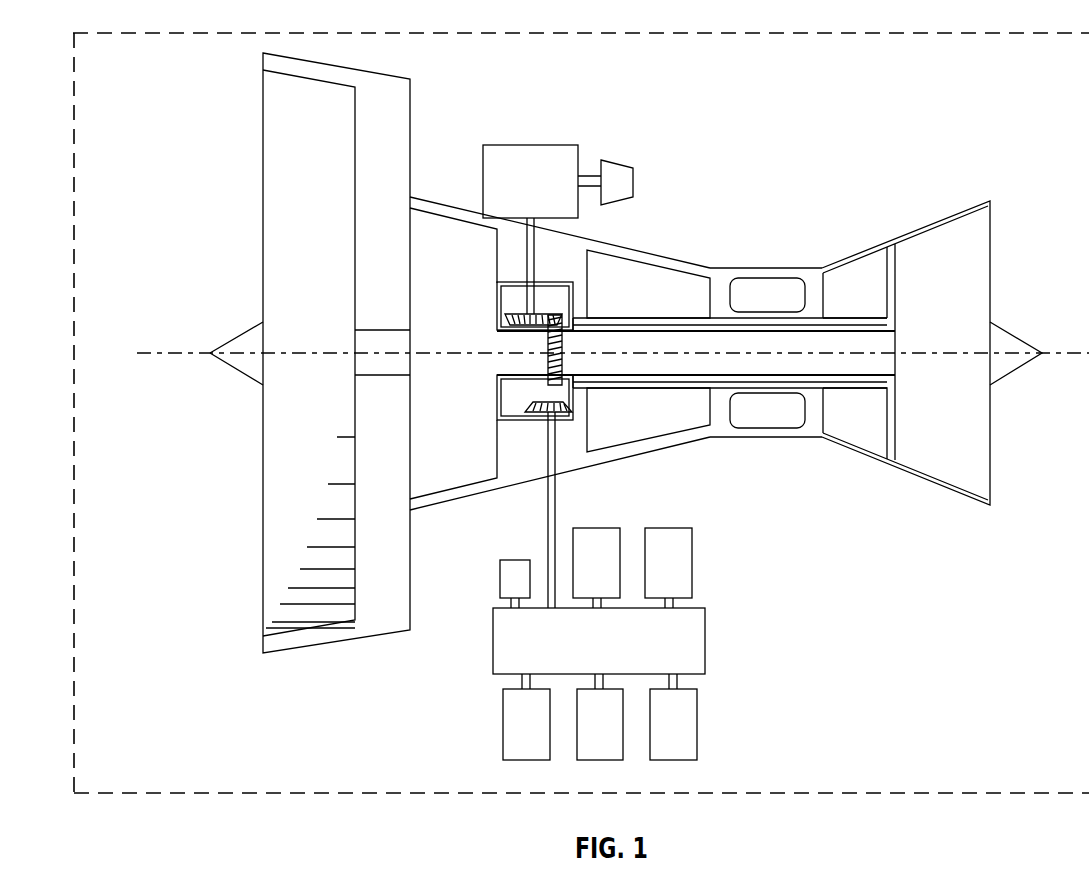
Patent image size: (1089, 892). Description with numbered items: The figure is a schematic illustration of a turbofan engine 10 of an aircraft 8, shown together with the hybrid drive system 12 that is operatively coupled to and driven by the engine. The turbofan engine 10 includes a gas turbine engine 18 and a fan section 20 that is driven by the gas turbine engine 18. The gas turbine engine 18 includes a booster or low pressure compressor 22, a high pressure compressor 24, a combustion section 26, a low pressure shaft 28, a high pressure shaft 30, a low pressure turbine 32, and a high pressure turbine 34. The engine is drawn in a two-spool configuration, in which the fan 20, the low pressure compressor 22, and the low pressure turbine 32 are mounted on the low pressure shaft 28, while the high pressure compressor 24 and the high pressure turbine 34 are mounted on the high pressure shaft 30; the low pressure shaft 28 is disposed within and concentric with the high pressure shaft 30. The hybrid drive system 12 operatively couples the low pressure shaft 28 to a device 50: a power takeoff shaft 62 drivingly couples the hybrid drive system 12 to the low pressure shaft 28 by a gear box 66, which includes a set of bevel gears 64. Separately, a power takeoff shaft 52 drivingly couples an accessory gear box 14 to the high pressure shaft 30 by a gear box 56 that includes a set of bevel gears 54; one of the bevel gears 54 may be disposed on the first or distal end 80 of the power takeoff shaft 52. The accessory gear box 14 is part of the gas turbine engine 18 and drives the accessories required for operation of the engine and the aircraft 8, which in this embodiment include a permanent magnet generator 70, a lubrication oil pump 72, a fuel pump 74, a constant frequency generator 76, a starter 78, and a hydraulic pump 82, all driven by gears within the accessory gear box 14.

The aircraft 8 is at (108, 30).
The turbofan engine 10 is at (424, 125).
The hybrid drive system 12 is at (545, 196).
The accessory gear box 14 is at (614, 658).
The gas turbine engine 18 is at (948, 171).
The fan section 20 is at (263, 193).
The low pressure compressor 22 is at (466, 339).
The high pressure compressor 24 is at (655, 265).
The combustion section 26 is at (763, 429).
The low pressure shaft 28 is at (775, 342).
The high pressure shaft 30 is at (842, 315).
The low pressure turbine 32 is at (978, 236).
The high pressure turbine 34 is at (857, 432).
The device 50 is at (622, 183).
The power takeoff shaft 52 is at (557, 525).
The bevel gears 54 is at (592, 399).
The gear box 56 is at (498, 412).
The power takeoff shaft 62 is at (538, 248).
The bevel gears 64 is at (567, 315).
The gear box 66 is at (500, 283).
The permanent magnet generator 70 is at (500, 578).
The lubrication oil pump 72 is at (610, 582).
The fuel pump 74 is at (682, 582).
The constant frequency generator 76 is at (540, 739).
The starter 78 is at (613, 739).
The distal end 80 is at (558, 452).
The hydraulic pump 82 is at (687, 739).